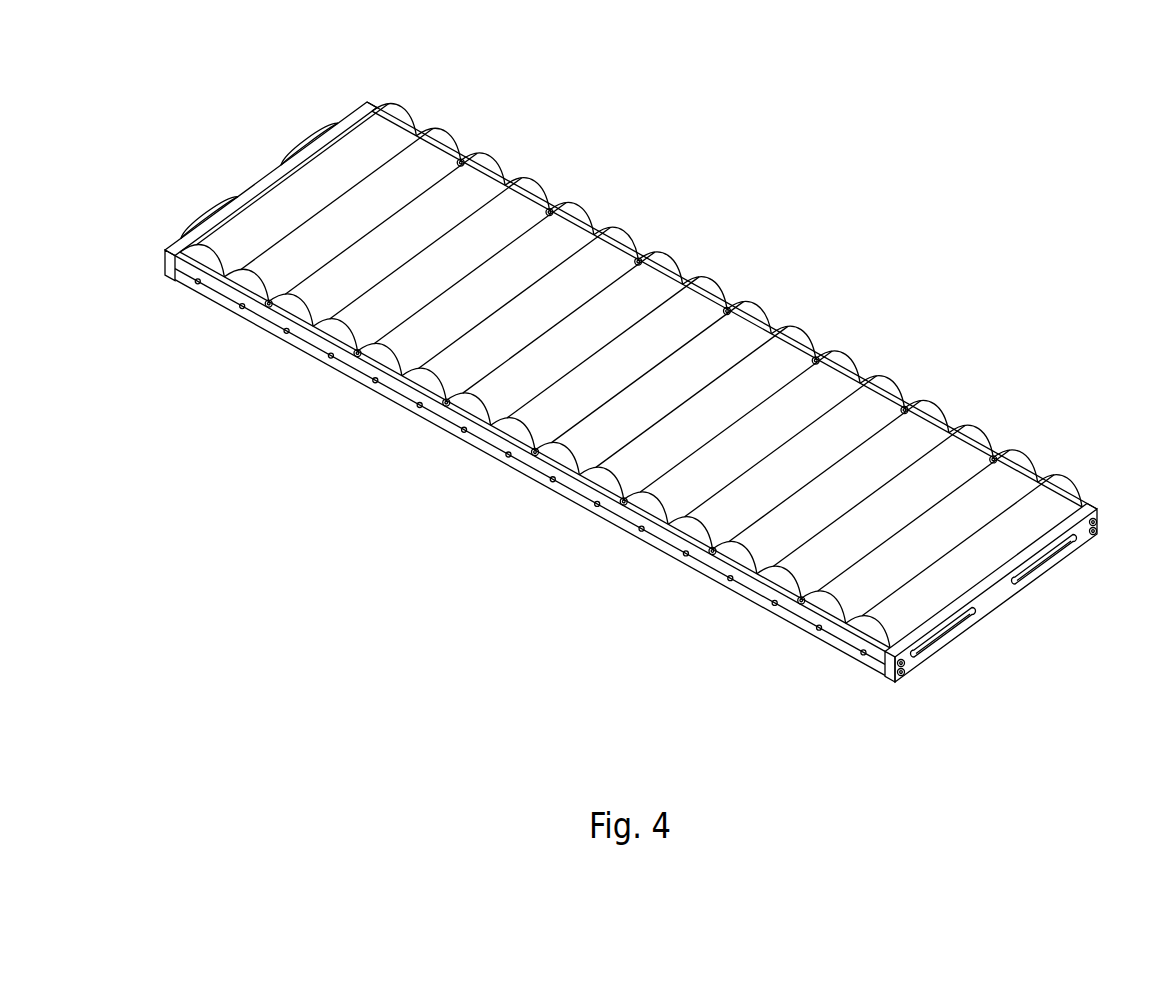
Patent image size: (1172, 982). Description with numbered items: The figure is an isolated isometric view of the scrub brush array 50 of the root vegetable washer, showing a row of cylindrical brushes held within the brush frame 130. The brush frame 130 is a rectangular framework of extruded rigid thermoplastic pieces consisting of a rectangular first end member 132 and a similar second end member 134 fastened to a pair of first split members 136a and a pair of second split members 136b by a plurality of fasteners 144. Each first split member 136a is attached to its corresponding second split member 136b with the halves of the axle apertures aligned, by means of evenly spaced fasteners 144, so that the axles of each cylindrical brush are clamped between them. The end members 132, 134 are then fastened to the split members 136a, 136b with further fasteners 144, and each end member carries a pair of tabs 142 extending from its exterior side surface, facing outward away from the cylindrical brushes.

The scrub brush array 50 is at (284, 534).
The brush frame 130 is at (120, 110).
The first end member 132 is at (163, 259).
The second end member 134 is at (997, 593).
The first split member 136a is at (272, 307).
The second split member 136b is at (752, 598).
The tab 142 is at (298, 143).
The fastener 144 is at (460, 154).